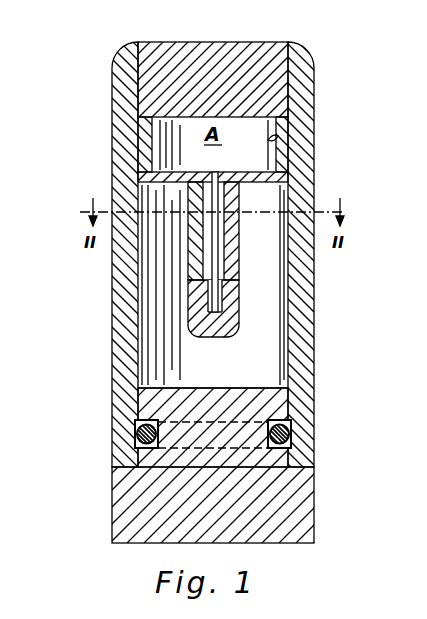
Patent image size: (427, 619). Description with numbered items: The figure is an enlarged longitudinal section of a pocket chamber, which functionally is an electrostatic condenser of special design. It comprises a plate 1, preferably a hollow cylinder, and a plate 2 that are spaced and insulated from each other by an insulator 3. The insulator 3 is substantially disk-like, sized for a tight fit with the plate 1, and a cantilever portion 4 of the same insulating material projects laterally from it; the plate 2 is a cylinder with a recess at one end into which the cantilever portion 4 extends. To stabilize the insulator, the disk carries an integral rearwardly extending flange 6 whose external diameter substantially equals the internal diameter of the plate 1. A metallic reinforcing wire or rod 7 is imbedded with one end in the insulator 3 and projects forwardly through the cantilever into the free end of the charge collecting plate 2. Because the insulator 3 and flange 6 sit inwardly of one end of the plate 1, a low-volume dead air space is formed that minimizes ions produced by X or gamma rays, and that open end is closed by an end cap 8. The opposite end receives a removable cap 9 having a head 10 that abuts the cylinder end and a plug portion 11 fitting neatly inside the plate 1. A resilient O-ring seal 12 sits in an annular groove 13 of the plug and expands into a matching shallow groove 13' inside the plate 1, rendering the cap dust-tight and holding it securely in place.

The plate 1 is at (314, 360).
The plate 2 is at (239, 282).
The insulator 3 is at (288, 178).
The cantilever portion 4 is at (234, 262).
The flange 6 is at (270, 138).
The reinforcing wire or rod 7 is at (230, 314).
The end cap 8 is at (232, 42).
The removable cap 9 is at (314, 524).
The head 10 is at (314, 483).
The plug portion 11 is at (290, 388).
The resilient seal 12 is at (314, 420).
The annular groove 13 is at (123, 421).
The shallow groove 13' is at (321, 438).